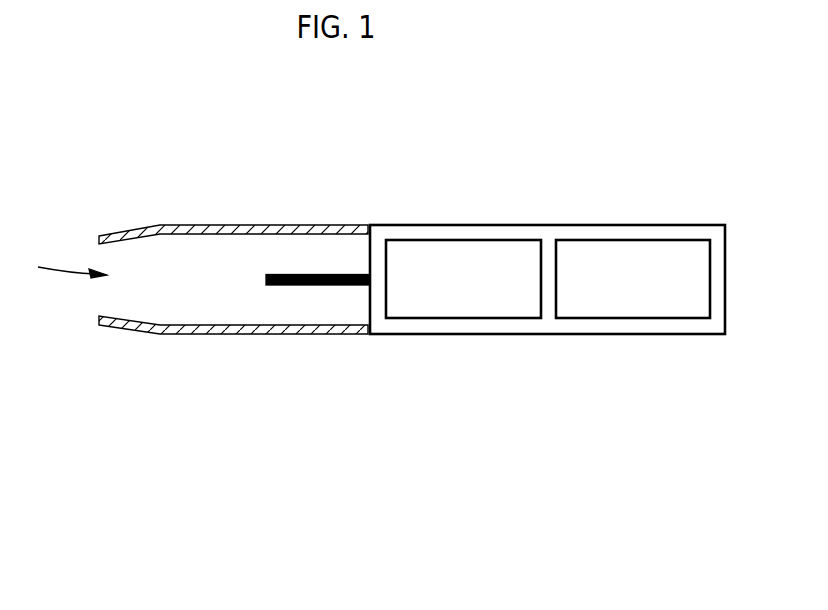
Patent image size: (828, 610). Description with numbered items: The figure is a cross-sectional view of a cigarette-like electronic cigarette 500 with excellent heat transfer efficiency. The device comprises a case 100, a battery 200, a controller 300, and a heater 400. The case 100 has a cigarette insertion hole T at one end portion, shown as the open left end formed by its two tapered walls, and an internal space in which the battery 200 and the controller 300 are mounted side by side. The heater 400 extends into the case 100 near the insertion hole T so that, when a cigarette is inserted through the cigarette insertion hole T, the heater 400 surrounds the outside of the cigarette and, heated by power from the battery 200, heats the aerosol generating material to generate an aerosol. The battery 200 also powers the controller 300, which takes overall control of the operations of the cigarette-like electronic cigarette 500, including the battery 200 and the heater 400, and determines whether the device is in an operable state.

The cigarette-like electronic cigarette 500 is at (148, 108).
The case 100 is at (232, 330).
The heater 400 is at (310, 285).
The battery 200 is at (462, 318).
The controller 300 is at (629, 318).
The cigarette insertion hole T is at (60, 265).